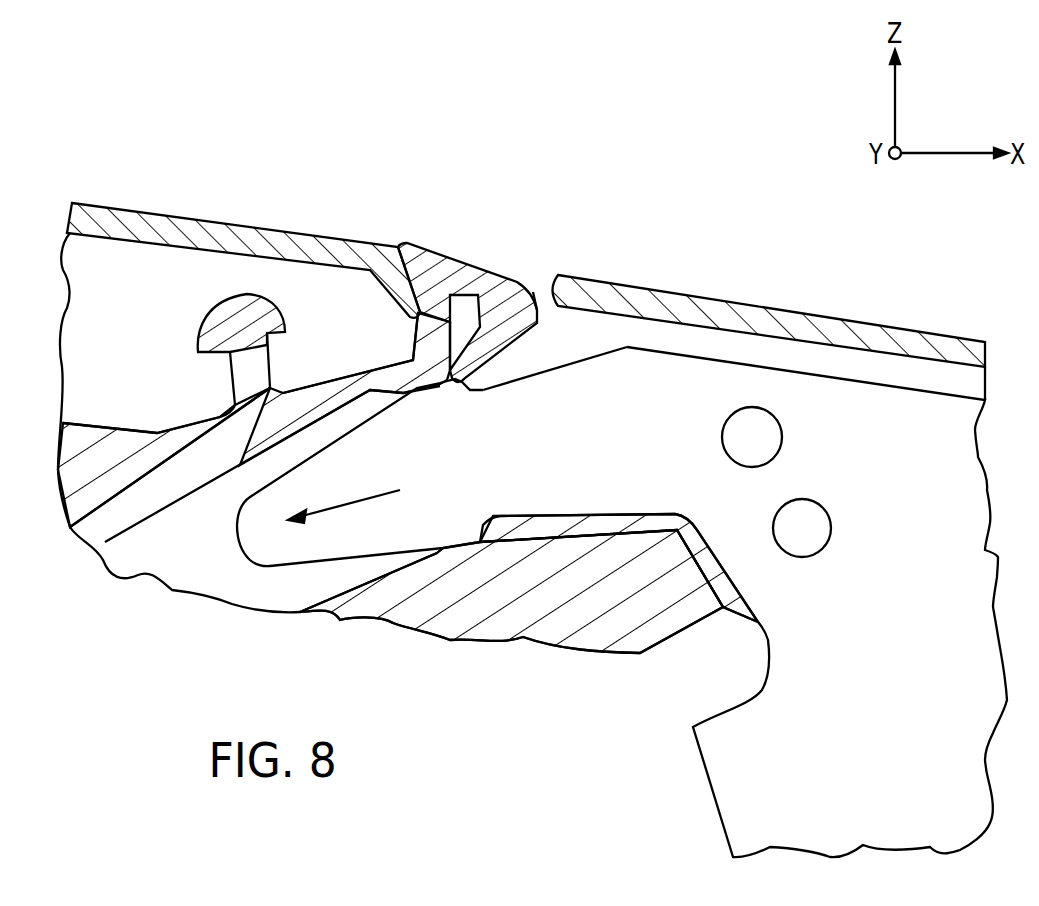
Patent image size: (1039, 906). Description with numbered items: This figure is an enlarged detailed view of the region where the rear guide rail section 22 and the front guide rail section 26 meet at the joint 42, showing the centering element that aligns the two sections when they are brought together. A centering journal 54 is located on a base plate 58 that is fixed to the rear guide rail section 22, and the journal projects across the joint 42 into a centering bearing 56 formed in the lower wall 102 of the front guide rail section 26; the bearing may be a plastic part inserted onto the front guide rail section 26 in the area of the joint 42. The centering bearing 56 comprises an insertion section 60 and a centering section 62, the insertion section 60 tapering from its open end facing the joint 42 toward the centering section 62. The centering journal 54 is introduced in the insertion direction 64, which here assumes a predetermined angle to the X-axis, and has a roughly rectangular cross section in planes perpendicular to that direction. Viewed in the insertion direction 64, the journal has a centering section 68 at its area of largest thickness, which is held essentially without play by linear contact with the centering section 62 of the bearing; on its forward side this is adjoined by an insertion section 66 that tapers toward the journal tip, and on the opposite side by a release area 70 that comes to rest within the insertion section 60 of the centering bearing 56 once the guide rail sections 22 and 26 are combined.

The rear guide rail section 22 is at (797, 320).
The front guide rail section 26 is at (141, 198).
The joint 42 is at (528, 290).
The centering journal 54 is at (472, 472).
The centering bearing 56 is at (540, 595).
The base plate 58 is at (930, 596).
The insertion section 60 is at (603, 523).
The centering section 62 is at (358, 412).
The insertion direction 64 is at (347, 510).
The insertion section 66 is at (290, 566).
The centering section 68 is at (477, 575).
The release area 70 is at (513, 381).
The lower wall 102 is at (278, 230).